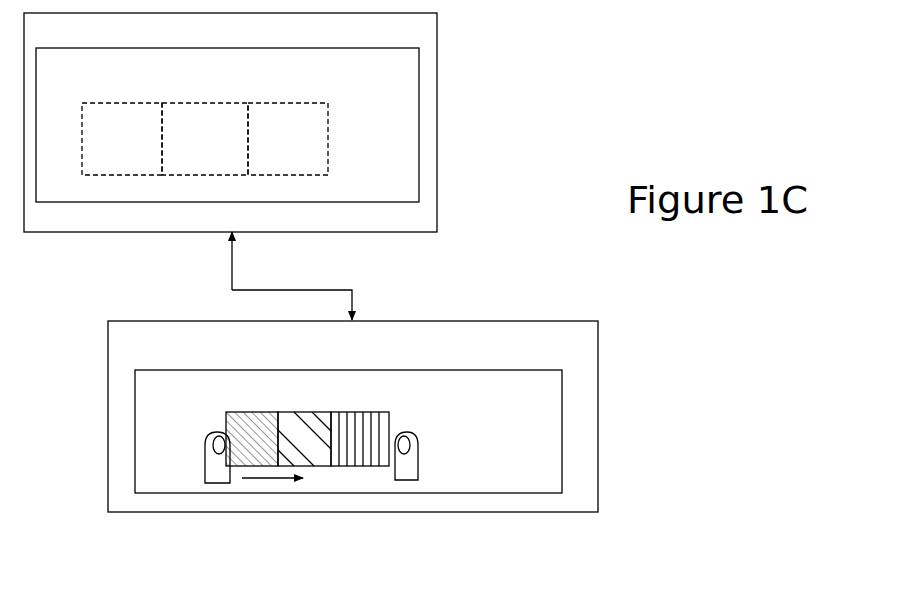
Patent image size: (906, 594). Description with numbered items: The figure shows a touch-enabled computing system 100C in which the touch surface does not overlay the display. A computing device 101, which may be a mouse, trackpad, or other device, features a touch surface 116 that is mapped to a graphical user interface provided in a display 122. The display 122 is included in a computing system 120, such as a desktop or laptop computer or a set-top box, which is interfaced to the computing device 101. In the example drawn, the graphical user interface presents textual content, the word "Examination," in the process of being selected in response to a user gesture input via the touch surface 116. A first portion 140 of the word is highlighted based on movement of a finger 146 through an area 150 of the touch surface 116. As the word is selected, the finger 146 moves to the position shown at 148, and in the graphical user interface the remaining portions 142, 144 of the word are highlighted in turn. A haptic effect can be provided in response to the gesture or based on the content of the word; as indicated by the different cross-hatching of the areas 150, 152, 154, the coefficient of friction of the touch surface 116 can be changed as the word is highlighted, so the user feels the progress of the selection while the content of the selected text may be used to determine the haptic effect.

The touch-enabled computing system 100C is at (507, 85).
The computing system 120 is at (358, 42).
The display 122 is at (292, 81).
The first portion 140 is at (162, 103).
The portion of the word 142 is at (245, 183).
The portion of the word 144 is at (247, 103).
The computing device 101 is at (475, 349).
The touch surface 116 is at (452, 401).
The finger 146 is at (203, 467).
The position of finger 148 is at (418, 440).
The area of touch surface 150 is at (228, 412).
The area of touch surface 152 is at (320, 466).
The area of touch surface 154 is at (389, 413).